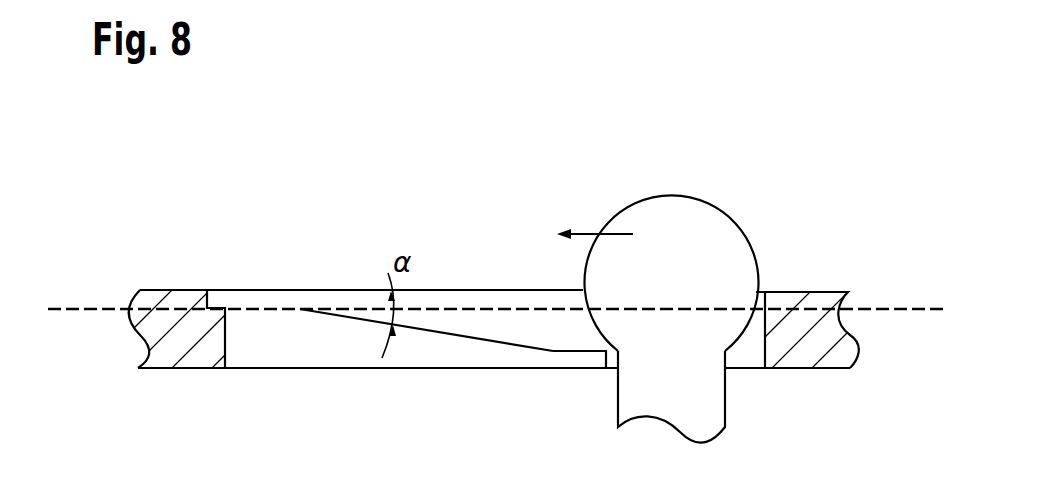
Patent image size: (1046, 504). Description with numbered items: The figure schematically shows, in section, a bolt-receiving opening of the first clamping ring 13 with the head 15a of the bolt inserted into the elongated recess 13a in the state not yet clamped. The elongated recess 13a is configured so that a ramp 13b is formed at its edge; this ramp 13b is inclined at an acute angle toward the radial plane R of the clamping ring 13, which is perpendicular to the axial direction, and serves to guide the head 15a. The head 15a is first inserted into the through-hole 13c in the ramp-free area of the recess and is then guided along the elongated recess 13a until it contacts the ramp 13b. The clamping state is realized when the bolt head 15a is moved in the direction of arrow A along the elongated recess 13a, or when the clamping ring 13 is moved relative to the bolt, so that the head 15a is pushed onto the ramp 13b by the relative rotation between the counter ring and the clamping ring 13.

The first clamping ring 13 is at (182, 297).
The elongated recess 13a is at (497, 297).
The ramp 13b is at (500, 327).
The through-hole 13c is at (750, 342).
The head of the bolt 15a is at (675, 208).
The direction of arrow A is at (588, 233).
The radial plane R is at (75, 312).